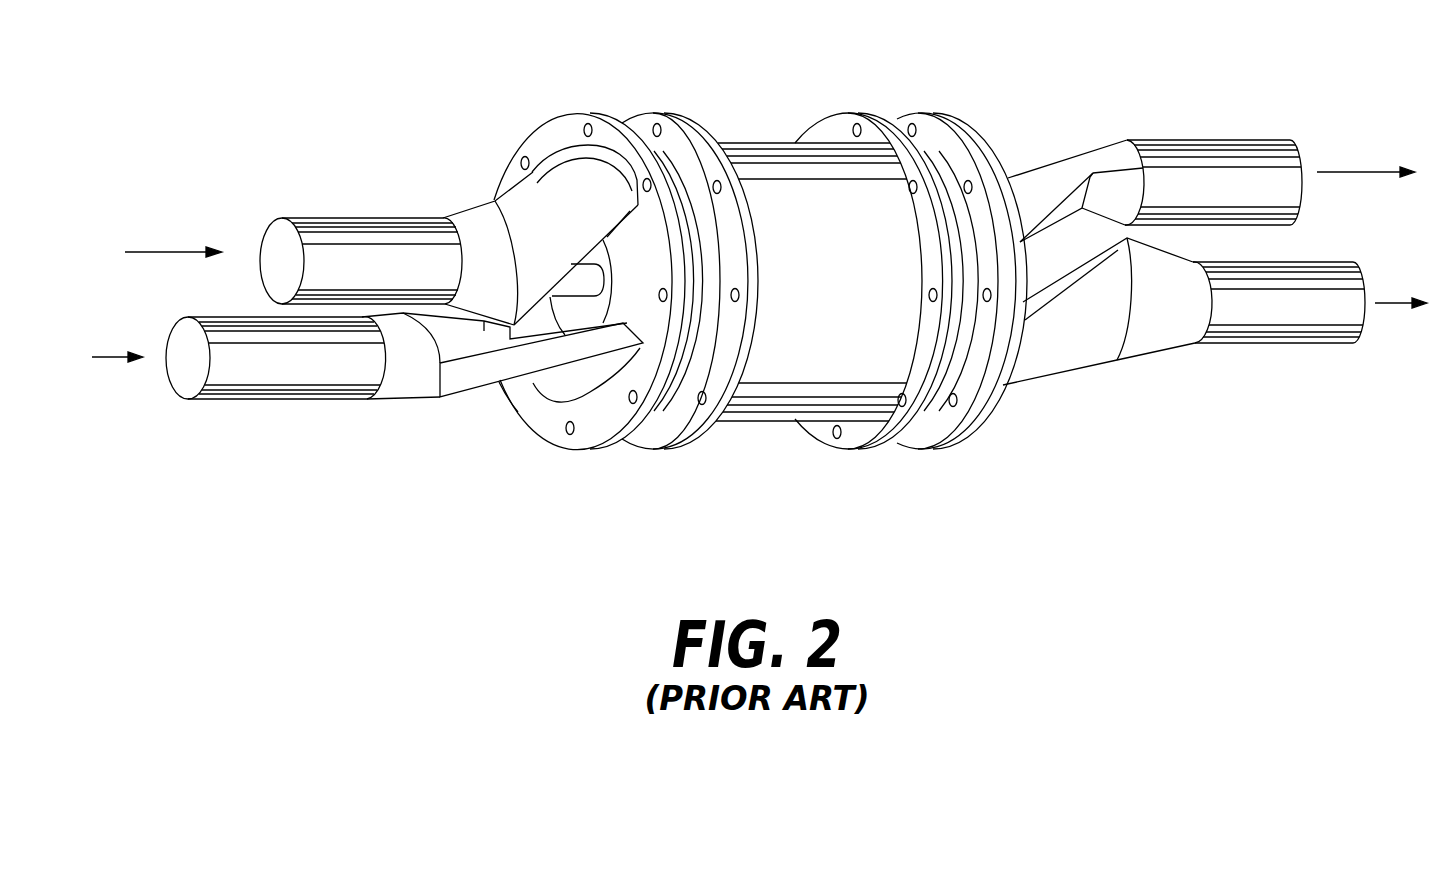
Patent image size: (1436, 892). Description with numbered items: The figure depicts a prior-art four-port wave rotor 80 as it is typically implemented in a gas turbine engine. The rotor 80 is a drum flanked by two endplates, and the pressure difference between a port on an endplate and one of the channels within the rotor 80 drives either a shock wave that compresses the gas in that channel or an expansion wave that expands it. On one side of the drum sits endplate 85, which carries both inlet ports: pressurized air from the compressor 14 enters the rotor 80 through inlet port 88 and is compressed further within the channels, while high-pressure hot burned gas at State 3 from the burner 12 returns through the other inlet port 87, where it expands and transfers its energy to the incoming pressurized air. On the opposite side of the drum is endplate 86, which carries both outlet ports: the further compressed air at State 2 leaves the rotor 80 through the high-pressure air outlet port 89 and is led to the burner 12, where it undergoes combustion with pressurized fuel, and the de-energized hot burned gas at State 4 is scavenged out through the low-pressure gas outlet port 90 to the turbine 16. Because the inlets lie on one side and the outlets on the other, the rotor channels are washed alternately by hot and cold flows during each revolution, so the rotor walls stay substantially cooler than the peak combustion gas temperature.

The wave rotor 80 is at (753, 423).
The endplate 85 is at (585, 121).
The endplate 86 is at (950, 450).
The inlet port 87 is at (547, 167).
The inlet port 88 is at (583, 400).
The high-pressure air outlet port 89 is at (1011, 177).
The low-pressure gas outlet port 90 is at (1005, 387).
The State 2 is at (1318, 123).
The State 3 is at (175, 195).
The State 4 is at (1320, 347).
The burner 12 is at (174, 213).
The compressor 14 is at (187, 438).
The turbine 16 is at (1299, 413).